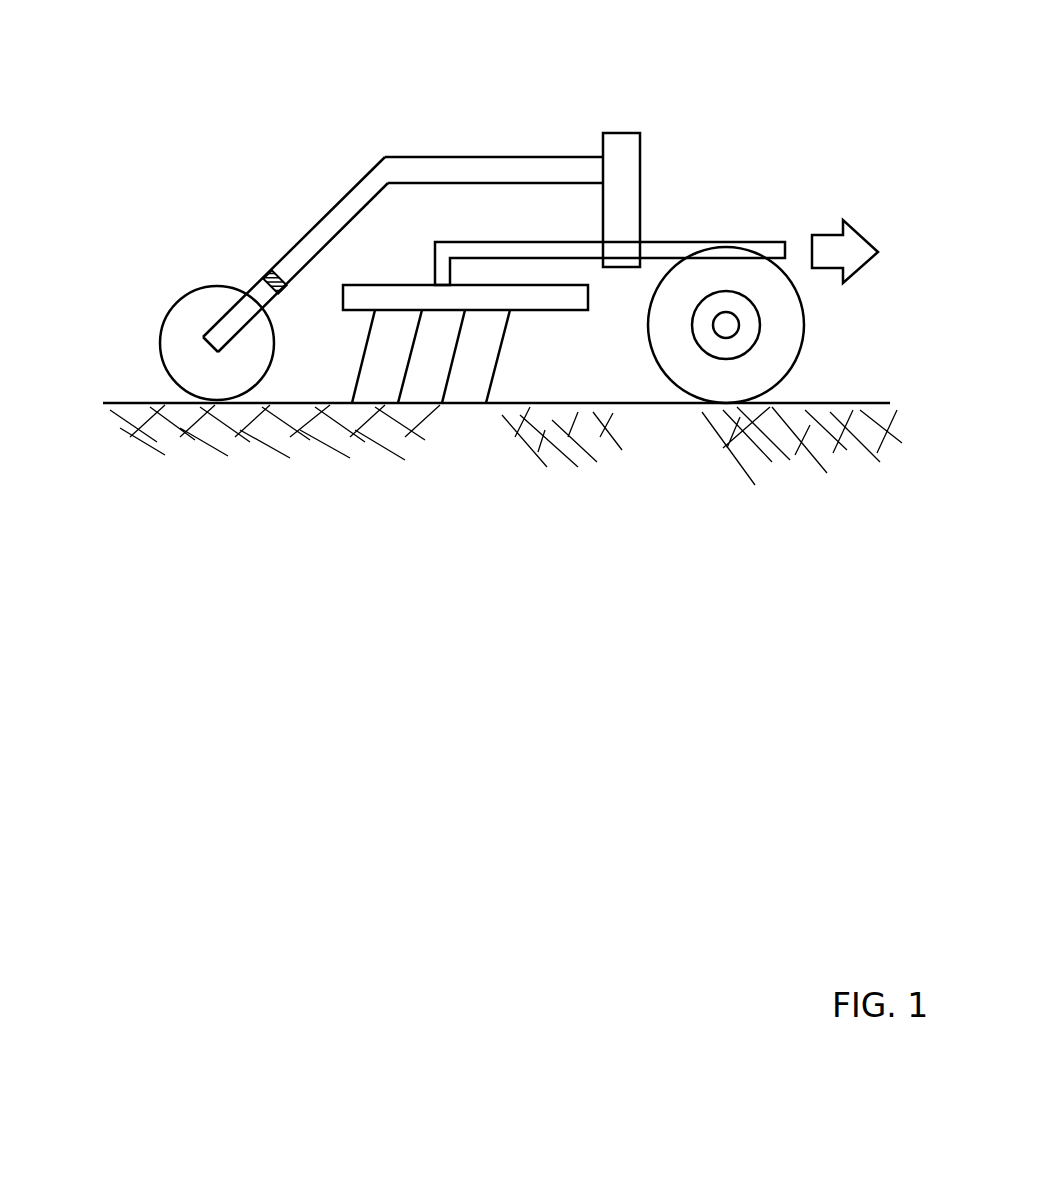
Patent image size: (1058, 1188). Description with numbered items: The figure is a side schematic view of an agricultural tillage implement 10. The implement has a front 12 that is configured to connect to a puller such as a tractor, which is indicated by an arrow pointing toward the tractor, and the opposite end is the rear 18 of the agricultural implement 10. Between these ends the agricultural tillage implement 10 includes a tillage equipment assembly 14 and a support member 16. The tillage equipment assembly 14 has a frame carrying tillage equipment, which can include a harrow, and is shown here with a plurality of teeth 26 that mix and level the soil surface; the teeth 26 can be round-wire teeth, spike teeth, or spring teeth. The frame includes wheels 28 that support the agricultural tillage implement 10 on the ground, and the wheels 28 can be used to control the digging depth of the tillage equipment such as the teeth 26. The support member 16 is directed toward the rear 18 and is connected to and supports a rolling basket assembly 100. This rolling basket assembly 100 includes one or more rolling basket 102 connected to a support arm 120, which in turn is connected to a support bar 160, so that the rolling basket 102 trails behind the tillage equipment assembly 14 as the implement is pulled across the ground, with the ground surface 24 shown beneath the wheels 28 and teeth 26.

The agricultural tillage implement 10 is at (291, 78).
The front 12 is at (810, 212).
The tillage equipment assembly 14 is at (676, 210).
The support member 16 is at (493, 152).
The rear 18 is at (90, 293).
The ground surface 24 is at (492, 462).
The teeth 26 is at (362, 360).
The wheels 28 is at (802, 345).
The rolling basket assembly 100 is at (243, 235).
The rolling basket 102 is at (160, 353).
The support arm 120 is at (247, 290).
The support bar 160 is at (267, 267).